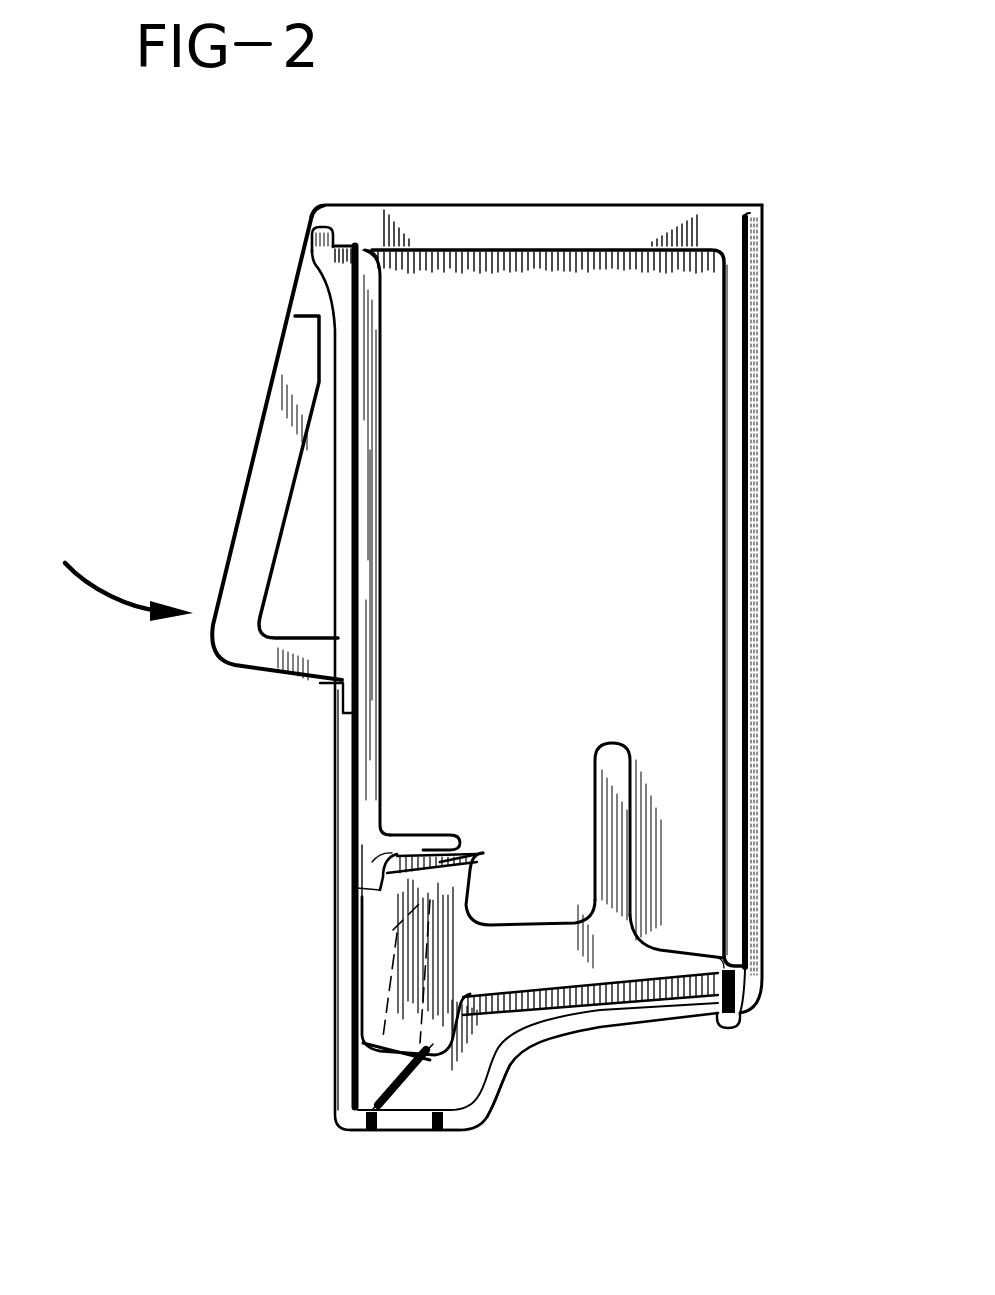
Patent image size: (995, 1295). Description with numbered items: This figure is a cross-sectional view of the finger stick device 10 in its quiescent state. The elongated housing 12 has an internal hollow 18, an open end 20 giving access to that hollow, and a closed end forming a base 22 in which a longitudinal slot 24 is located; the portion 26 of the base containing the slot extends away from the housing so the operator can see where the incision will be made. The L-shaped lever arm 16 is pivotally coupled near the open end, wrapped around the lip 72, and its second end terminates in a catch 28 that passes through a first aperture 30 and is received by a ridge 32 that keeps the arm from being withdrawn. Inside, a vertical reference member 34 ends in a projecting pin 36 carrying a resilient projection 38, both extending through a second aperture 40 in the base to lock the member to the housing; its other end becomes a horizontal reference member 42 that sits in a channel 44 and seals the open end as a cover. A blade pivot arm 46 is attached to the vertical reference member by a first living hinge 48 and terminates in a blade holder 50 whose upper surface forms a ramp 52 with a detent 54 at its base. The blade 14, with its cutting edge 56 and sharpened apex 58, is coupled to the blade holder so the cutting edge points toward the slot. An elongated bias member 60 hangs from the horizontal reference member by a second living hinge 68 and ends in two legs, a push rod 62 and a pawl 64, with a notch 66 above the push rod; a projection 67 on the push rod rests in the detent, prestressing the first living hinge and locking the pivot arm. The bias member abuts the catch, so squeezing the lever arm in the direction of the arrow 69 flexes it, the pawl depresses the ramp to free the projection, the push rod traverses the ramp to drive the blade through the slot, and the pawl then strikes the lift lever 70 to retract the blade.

The finger stick device 10 is at (642, 112).
The housing 12 is at (767, 760).
The blade 14 is at (375, 1062).
The lever arm 16 is at (258, 470).
The internal hollow 18 is at (577, 521).
The open end 20 is at (765, 207).
The base 22 is at (458, 1132).
The longitudinal slot 24 is at (397, 1140).
The portion 26 is at (498, 1088).
The catch 28 is at (358, 695).
The first aperture 30 is at (385, 650).
The ridge 32 is at (320, 690).
The vertical reference member 34 is at (740, 578).
The projecting pin 36 is at (742, 983).
The resilient projection 38 is at (730, 1027).
The second aperture 40 is at (738, 1011).
The horizontal reference member 42 is at (680, 215).
The channel 44 is at (317, 267).
The blade pivot arm 46 is at (618, 978).
The first living hinge 48 is at (717, 960).
The blade holder 50 is at (498, 1040).
The ramp 52 is at (482, 855).
The detent 54 is at (375, 897).
The cutting edge 56 is at (426, 1135).
The sharpened apex 58 is at (370, 1135).
The bias member 60 is at (372, 470).
The push rod 62 is at (372, 862).
The pawl 64 is at (433, 836).
The notch 66 is at (355, 840).
The projection 67 is at (372, 889).
The second living hinge 68 is at (363, 250).
The arrow 69 is at (110, 598).
The lift lever 70 is at (618, 745).
The lip 72 is at (323, 217).